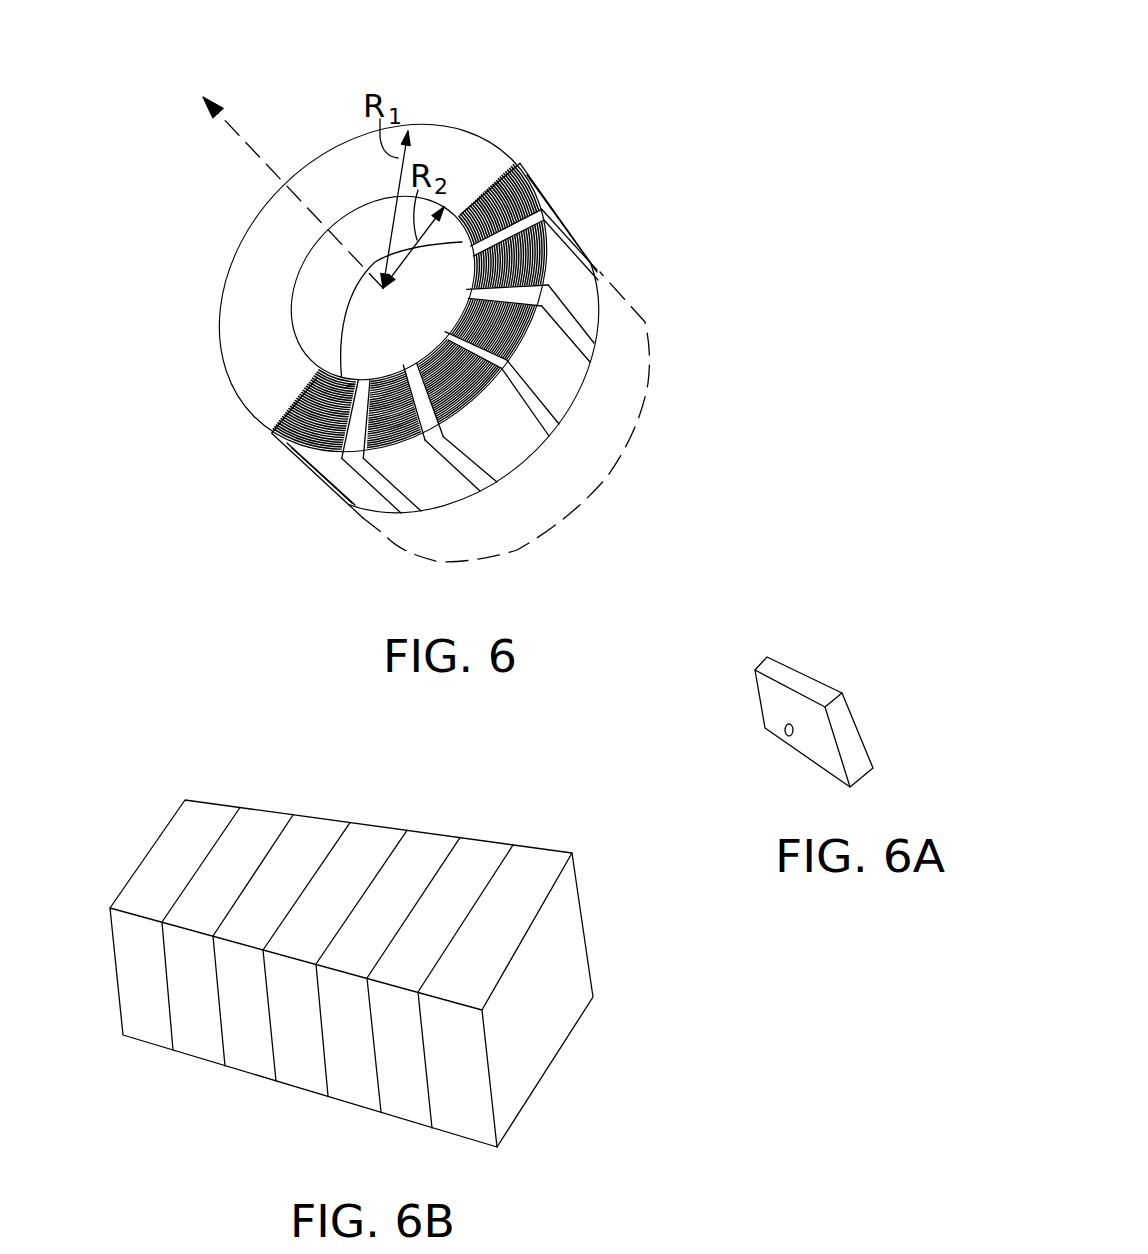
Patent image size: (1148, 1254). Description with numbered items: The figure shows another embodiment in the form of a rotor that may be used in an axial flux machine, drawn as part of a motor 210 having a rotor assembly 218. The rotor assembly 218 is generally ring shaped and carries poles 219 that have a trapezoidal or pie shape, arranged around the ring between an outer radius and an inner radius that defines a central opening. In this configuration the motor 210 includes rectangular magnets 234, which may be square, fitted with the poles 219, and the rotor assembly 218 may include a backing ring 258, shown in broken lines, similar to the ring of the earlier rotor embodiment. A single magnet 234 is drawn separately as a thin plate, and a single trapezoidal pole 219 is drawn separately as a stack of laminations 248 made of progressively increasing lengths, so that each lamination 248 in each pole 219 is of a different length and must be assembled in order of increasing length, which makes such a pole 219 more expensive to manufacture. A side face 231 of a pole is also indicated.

In FIG. 6, the motor 210 is at (645, 106).
In FIG. 6, the rotor assembly 218 is at (180, 266).
In FIG. 6, the poles 219 is at (390, 437).
In FIG. 6B, the poles 219 is at (580, 796).
In FIG. 6, the core segment side 231 is at (576, 438).
In FIG. 6, the rectangular magnets 234 is at (470, 467).
In FIG. 6A, the laminations 248 is at (853, 742).
In FIG. 6B, the laminations 248 is at (376, 822).
In FIG. 6, the backing ring 258 is at (652, 372).